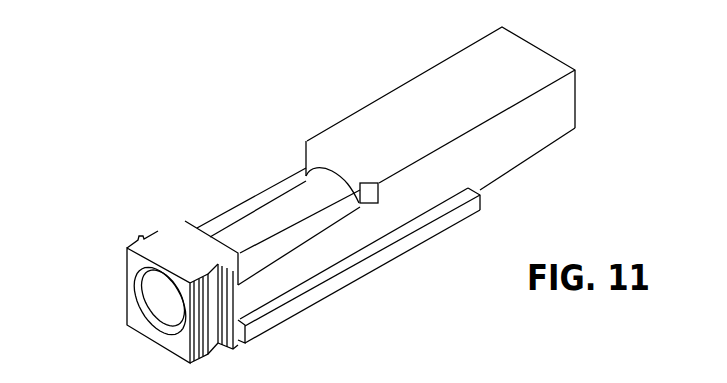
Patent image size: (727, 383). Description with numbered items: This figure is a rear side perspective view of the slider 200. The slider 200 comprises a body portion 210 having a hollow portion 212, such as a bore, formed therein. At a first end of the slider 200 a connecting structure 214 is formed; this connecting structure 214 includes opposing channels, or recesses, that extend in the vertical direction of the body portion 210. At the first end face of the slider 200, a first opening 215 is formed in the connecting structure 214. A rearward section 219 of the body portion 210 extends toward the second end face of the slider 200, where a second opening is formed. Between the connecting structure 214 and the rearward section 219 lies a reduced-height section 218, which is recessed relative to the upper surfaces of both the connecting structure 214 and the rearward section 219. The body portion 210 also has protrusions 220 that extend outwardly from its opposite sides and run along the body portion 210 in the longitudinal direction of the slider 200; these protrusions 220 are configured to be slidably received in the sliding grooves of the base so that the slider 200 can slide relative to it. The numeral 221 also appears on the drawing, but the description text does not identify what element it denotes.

The slider 200 is at (200, 150).
The body portion 210 is at (522, 141).
The hollow portion 212 is at (240, 232).
The connecting structure 214 is at (151, 251).
The first opening 215 is at (155, 300).
The reduced-height section 218 is at (270, 174).
The rearward section 219 is at (441, 86).
The protrusions 220 is at (392, 253).
The upper portion 221 is at (62, 5).